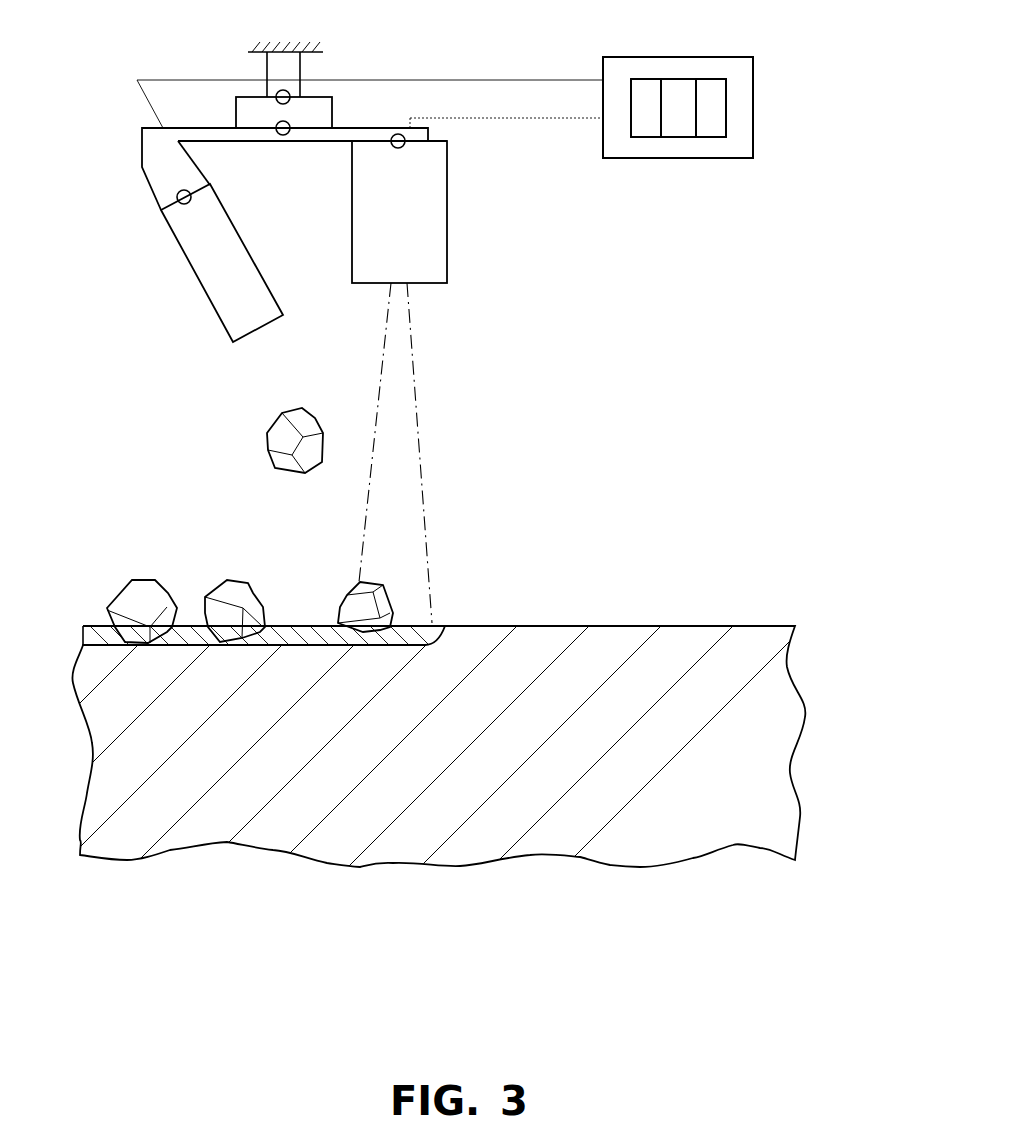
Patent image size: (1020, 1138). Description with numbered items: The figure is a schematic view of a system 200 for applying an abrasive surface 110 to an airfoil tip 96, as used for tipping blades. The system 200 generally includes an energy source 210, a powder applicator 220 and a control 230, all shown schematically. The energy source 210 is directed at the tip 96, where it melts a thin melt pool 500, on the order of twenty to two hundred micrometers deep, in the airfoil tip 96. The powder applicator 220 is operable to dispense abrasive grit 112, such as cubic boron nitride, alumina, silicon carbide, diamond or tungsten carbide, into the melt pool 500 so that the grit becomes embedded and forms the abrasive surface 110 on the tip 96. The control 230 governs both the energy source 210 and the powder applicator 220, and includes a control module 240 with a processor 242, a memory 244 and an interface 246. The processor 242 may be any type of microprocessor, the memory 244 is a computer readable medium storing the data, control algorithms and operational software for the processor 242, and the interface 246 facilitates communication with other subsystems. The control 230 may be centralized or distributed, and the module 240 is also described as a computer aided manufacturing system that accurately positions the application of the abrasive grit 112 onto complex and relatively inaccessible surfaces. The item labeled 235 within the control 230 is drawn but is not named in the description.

The tip 96 is at (743, 653).
The abrasive surface 110 is at (141, 560).
The abrasive grit 112 is at (288, 467).
The system 200 is at (826, 193).
The energy source 210 is at (427, 213).
The powder applicator 220 is at (202, 266).
The control 230 is at (704, 165).
The processing unit 235 is at (731, 125).
The control module 240 is at (152, 165).
The processor 242 is at (672, 122).
The memory 244 is at (645, 127).
The interface 246 is at (712, 95).
The melt pool 500 is at (405, 627).